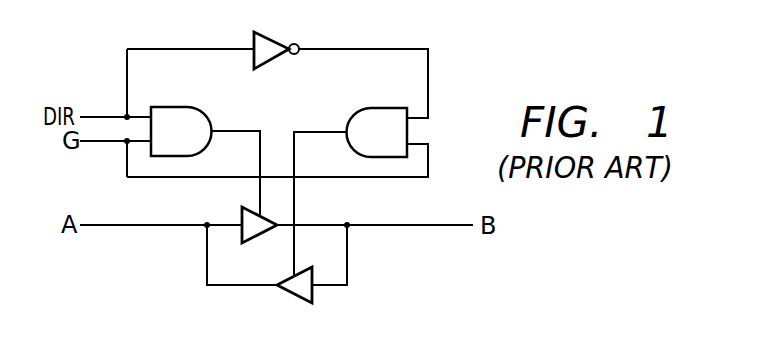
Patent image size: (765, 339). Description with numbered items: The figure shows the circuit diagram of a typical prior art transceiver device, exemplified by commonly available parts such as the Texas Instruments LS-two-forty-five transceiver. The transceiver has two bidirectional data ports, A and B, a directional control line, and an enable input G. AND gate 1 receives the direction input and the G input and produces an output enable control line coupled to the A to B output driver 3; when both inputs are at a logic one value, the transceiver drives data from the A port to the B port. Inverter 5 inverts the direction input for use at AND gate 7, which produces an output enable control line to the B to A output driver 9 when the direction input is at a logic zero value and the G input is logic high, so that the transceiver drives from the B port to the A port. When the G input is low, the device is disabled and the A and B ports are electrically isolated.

The AND gate 1 is at (211, 121).
The A to B output driver 3 is at (242, 215).
The inverter 5 is at (254, 38).
The AND gate 7 is at (347, 121).
The B to A output driver 9 is at (315, 293).